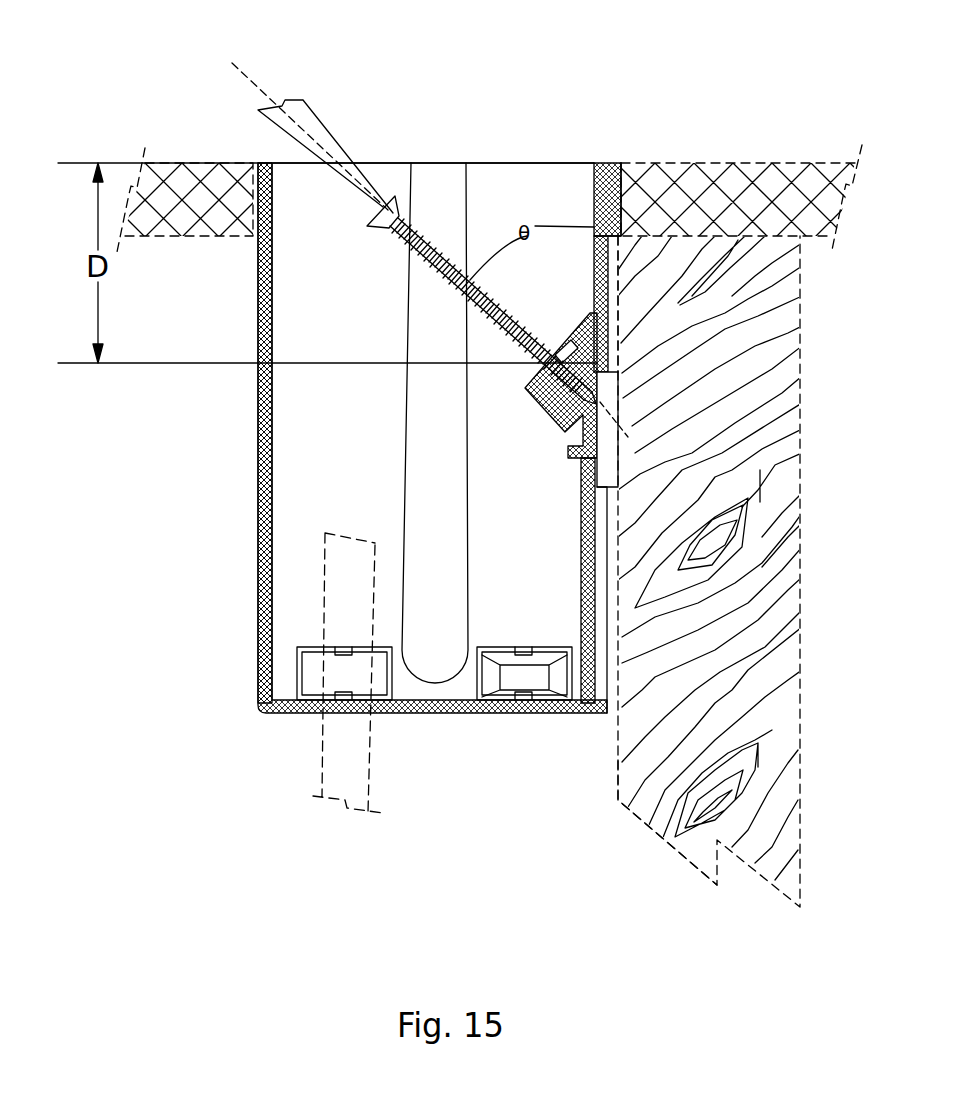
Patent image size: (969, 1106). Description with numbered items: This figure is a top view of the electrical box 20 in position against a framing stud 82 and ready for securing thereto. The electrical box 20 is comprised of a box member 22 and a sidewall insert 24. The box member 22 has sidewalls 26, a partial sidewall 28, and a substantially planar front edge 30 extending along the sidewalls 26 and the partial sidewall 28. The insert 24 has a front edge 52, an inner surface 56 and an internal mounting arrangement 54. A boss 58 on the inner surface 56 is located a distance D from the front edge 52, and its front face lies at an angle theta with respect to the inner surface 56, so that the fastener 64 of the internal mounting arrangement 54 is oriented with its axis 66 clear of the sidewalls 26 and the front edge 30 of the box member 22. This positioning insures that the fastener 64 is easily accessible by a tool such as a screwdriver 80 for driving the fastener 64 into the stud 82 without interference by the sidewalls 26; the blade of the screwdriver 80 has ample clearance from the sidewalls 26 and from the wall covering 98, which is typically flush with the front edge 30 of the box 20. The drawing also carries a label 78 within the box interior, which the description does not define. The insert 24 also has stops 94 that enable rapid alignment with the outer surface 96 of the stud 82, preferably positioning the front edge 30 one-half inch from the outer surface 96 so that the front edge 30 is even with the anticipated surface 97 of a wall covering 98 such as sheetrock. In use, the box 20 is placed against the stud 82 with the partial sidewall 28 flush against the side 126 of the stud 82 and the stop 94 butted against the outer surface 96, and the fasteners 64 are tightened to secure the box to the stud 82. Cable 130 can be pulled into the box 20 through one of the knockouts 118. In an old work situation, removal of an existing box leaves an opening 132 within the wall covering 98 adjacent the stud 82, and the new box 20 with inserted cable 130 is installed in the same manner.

The electrical box 20 is at (178, 456).
The box member 22 is at (263, 570).
The sidewall insert 24 is at (603, 300).
The sidewalls 26 is at (262, 163).
The partial sidewall 28 is at (604, 528).
The front edge 30 is at (486, 163).
The front edge 52 is at (602, 163).
The internal mounting arrangement 54 is at (492, 417).
The inner surface 56 is at (592, 262).
The boss 58 is at (548, 400).
The fastener 64 is at (393, 215).
The axis 66 is at (263, 92).
The cavity 78 is at (343, 407).
The screwdriver 80 is at (320, 128).
The stud 82 is at (733, 437).
The stops 94 is at (610, 238).
The outer surface 96 is at (663, 236).
The anticipated surface 97 is at (741, 163).
The wall covering 98 is at (778, 190).
The knockouts 118 is at (302, 674).
The side 126 is at (617, 752).
The cable 130 is at (343, 597).
The opening 132 is at (621, 163).